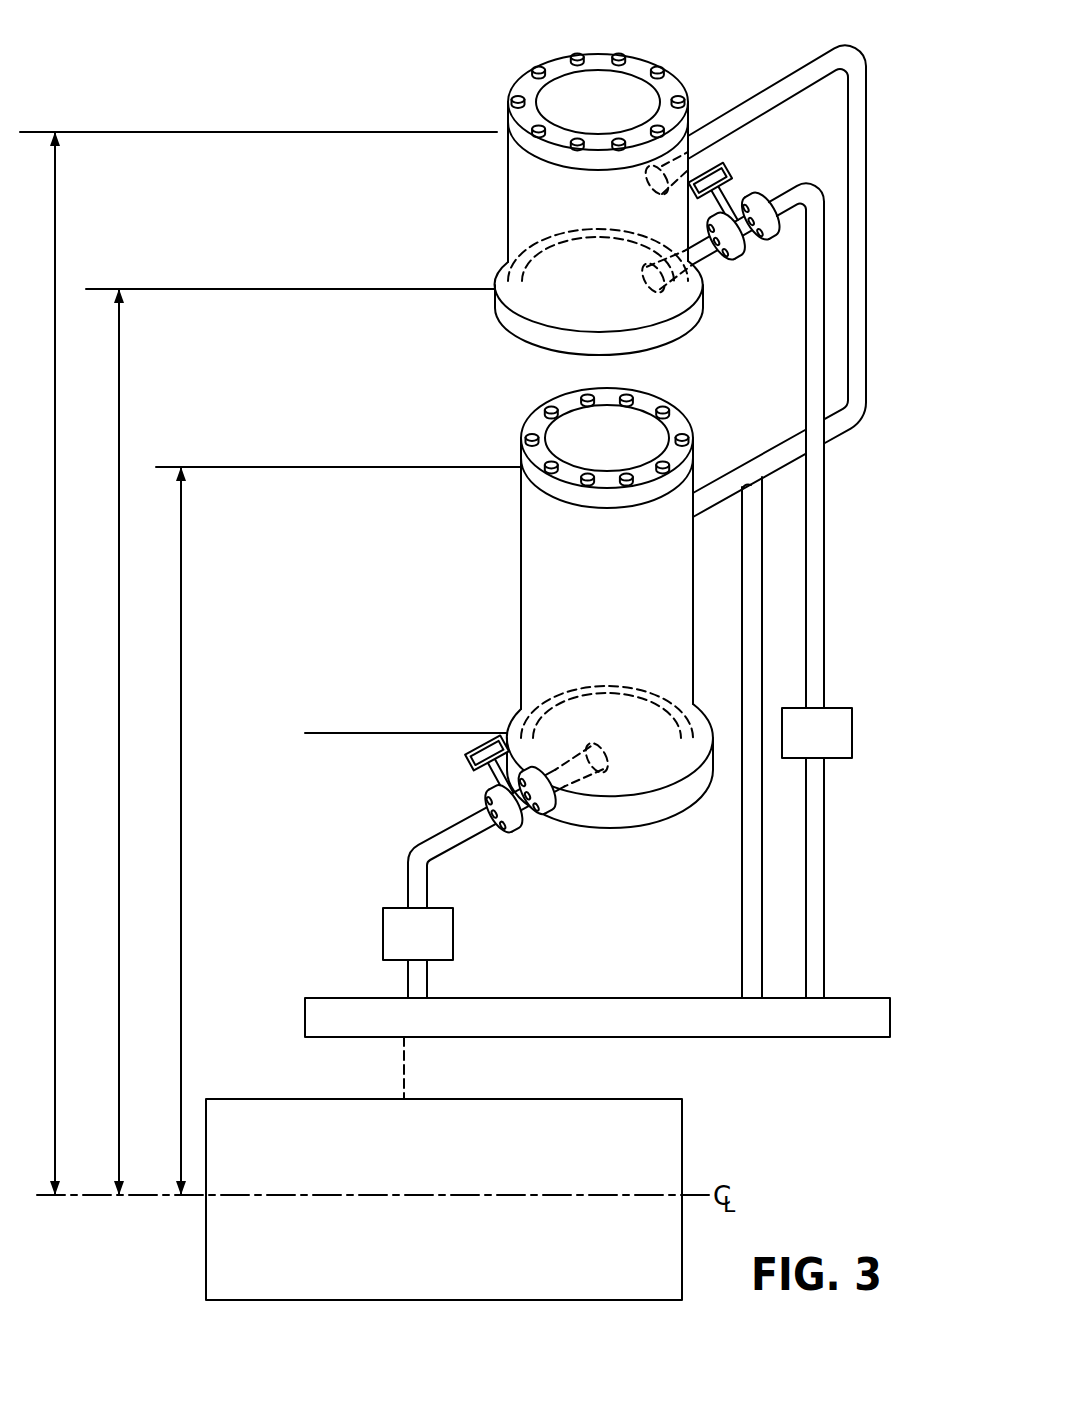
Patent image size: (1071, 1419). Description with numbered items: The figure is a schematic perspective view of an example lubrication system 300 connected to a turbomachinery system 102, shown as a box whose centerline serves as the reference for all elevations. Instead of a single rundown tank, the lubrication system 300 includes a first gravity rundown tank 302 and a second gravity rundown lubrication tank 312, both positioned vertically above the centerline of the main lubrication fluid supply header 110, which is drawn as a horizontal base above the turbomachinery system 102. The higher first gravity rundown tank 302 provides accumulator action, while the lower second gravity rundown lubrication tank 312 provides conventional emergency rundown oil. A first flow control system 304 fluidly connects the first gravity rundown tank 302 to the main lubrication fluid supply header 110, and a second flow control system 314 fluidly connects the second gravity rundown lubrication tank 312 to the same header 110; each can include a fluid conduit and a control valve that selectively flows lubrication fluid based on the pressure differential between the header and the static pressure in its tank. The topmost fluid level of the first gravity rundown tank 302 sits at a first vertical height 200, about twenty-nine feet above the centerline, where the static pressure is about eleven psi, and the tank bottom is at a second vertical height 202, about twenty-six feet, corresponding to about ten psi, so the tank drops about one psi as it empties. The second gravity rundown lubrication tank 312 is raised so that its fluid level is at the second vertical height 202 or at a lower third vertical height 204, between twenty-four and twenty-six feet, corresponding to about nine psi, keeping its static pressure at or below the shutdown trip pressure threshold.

The lubrication system 300 is at (170, 74).
The first gravity rundown tank 302 is at (670, 61).
The second gravity rundown lubrication tank 312 is at (536, 411).
The first flow control system 304 is at (853, 707).
The second flow control system 314 is at (379, 922).
The main lubrication fluid supply header 110 is at (930, 980).
The turbomachinery system 102 is at (690, 1163).
The first vertical height 200 is at (58, 192).
The second vertical height 202 is at (122, 376).
The third vertical height 204 is at (184, 539).